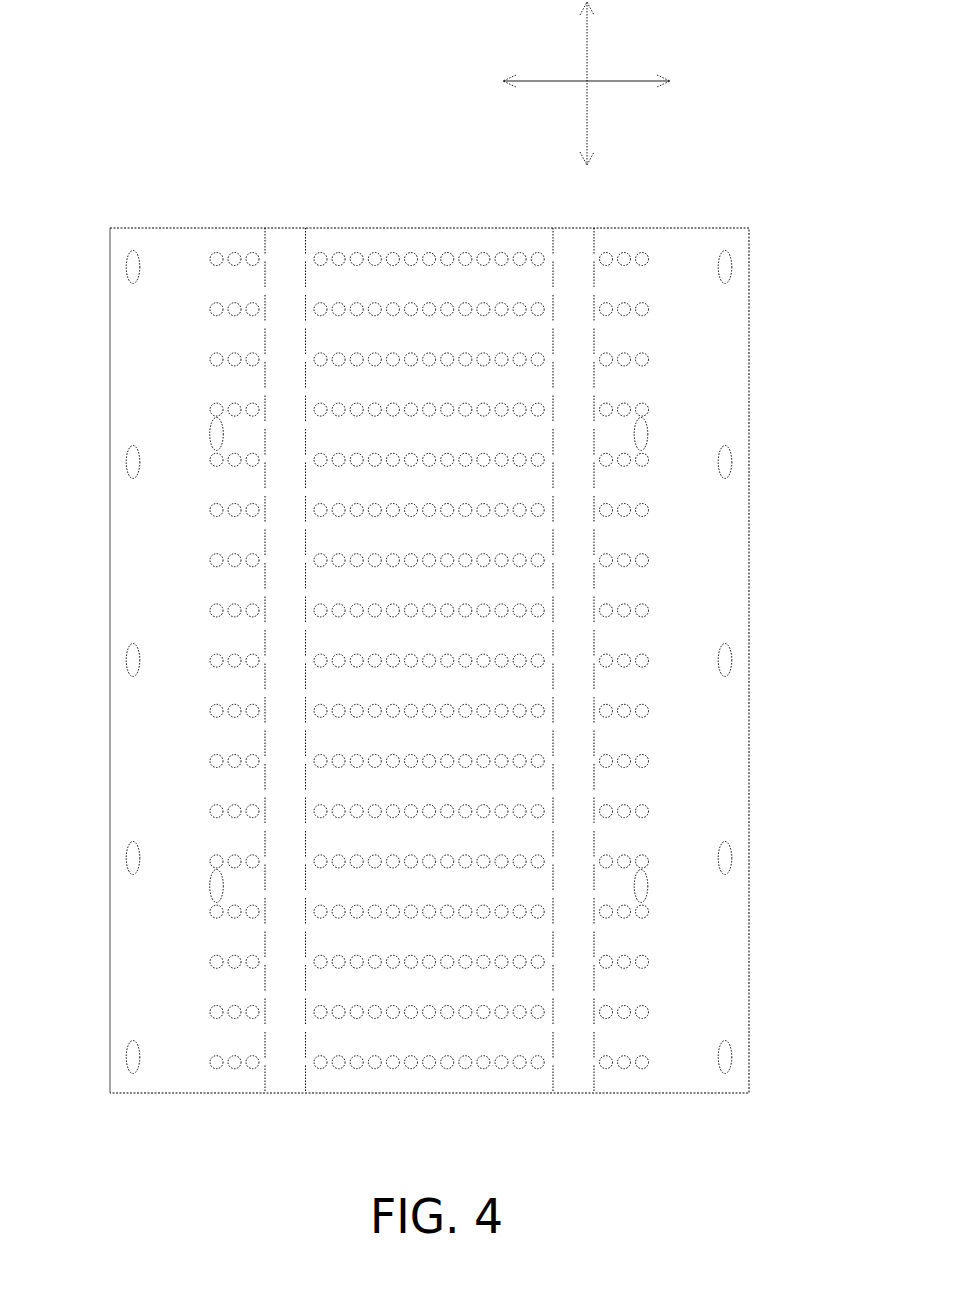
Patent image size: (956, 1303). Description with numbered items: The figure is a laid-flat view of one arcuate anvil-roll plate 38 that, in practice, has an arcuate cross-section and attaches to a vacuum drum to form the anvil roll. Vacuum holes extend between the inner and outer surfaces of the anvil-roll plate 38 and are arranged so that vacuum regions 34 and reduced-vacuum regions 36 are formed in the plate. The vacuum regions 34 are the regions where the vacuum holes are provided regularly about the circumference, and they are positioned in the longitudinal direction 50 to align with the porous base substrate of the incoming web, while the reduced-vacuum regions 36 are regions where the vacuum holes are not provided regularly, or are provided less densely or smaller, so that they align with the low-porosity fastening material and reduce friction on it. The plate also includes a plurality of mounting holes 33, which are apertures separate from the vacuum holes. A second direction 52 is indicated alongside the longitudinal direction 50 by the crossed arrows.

The anvil-roll plate 38 is at (140, 177).
The mounting holes 33 is at (642, 430).
The vacuum regions 34 is at (262, 1101).
The reduced-vacuum regions 36 is at (304, 1101).
The longitudinal direction 50 is at (610, 83).
The vertical (longitudinal) direction 52 is at (590, 130).